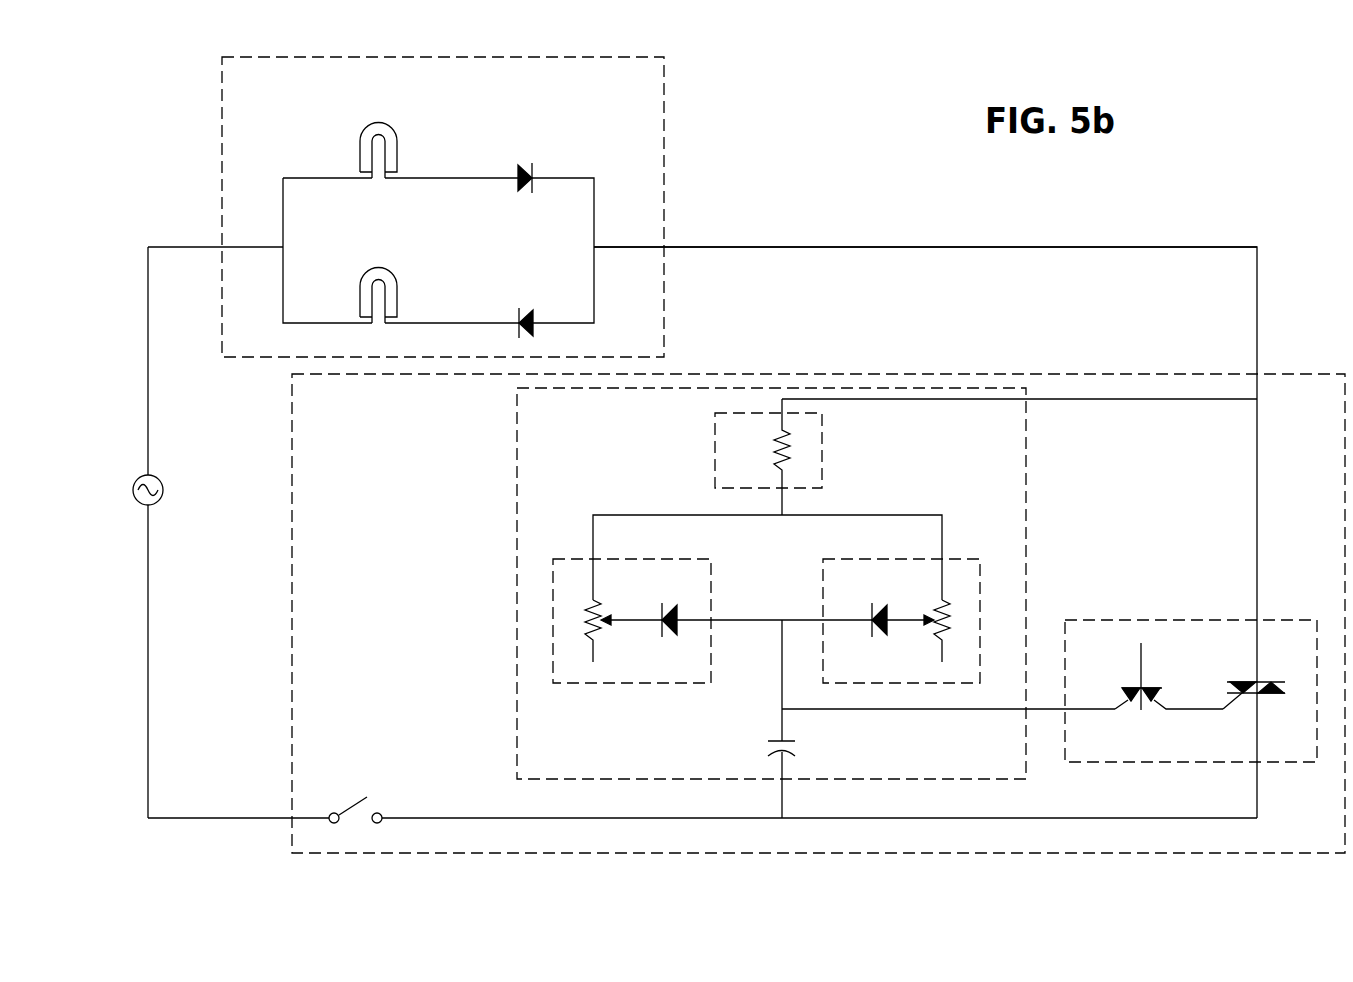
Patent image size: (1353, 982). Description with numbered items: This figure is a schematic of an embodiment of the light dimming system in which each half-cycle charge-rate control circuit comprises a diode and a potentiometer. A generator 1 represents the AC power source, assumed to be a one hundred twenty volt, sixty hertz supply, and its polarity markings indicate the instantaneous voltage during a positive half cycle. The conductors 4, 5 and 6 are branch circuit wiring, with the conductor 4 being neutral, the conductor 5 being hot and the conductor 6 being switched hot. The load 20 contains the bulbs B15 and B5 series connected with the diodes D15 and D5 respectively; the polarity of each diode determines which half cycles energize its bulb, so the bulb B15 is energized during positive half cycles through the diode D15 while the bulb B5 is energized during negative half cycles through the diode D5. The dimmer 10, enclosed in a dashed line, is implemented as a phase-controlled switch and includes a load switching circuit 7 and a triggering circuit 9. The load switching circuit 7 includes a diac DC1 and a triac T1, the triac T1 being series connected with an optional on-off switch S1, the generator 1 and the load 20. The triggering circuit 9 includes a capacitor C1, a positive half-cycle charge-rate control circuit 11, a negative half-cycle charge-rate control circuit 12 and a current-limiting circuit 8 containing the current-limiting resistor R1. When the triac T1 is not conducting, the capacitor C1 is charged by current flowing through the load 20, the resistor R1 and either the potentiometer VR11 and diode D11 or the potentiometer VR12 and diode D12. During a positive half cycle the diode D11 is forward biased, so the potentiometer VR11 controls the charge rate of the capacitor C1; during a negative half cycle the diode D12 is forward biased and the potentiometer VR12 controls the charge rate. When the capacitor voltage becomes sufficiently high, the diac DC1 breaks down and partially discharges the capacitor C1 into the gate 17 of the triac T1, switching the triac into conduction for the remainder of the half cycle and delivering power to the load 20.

The load 20 is at (420, 57).
The conductor 4 is at (148, 325).
The conductor 5 is at (148, 606).
The generator 1 is at (133, 490).
The conductor 6 is at (940, 247).
The bulb B15 is at (368, 122).
The bulb B5 is at (368, 267).
The diode D15 is at (526, 163).
The diode D5 is at (525, 308).
The dimmer 10 is at (291, 558).
The triggering circuit 9 is at (517, 535).
The current-limiting circuit 8 is at (715, 455).
The current-limiting resistor R1 is at (771, 455).
The negative half-cycle charge-rate control circuit 12 is at (578, 558).
The positive half-cycle charge-rate control circuit 11 is at (955, 558).
The potentiometer VR12 is at (597, 608).
The potentiometer VR11 is at (938, 608).
The diode D12 is at (674, 636).
The diode D11 is at (882, 636).
The capacitor C1 is at (772, 741).
The load switching circuit 7 is at (1155, 620).
The diac DC1 is at (1150, 703).
The triac T1 is at (1270, 695).
The gate 17 is at (1243, 680).
The on-off switch S1 is at (350, 808).